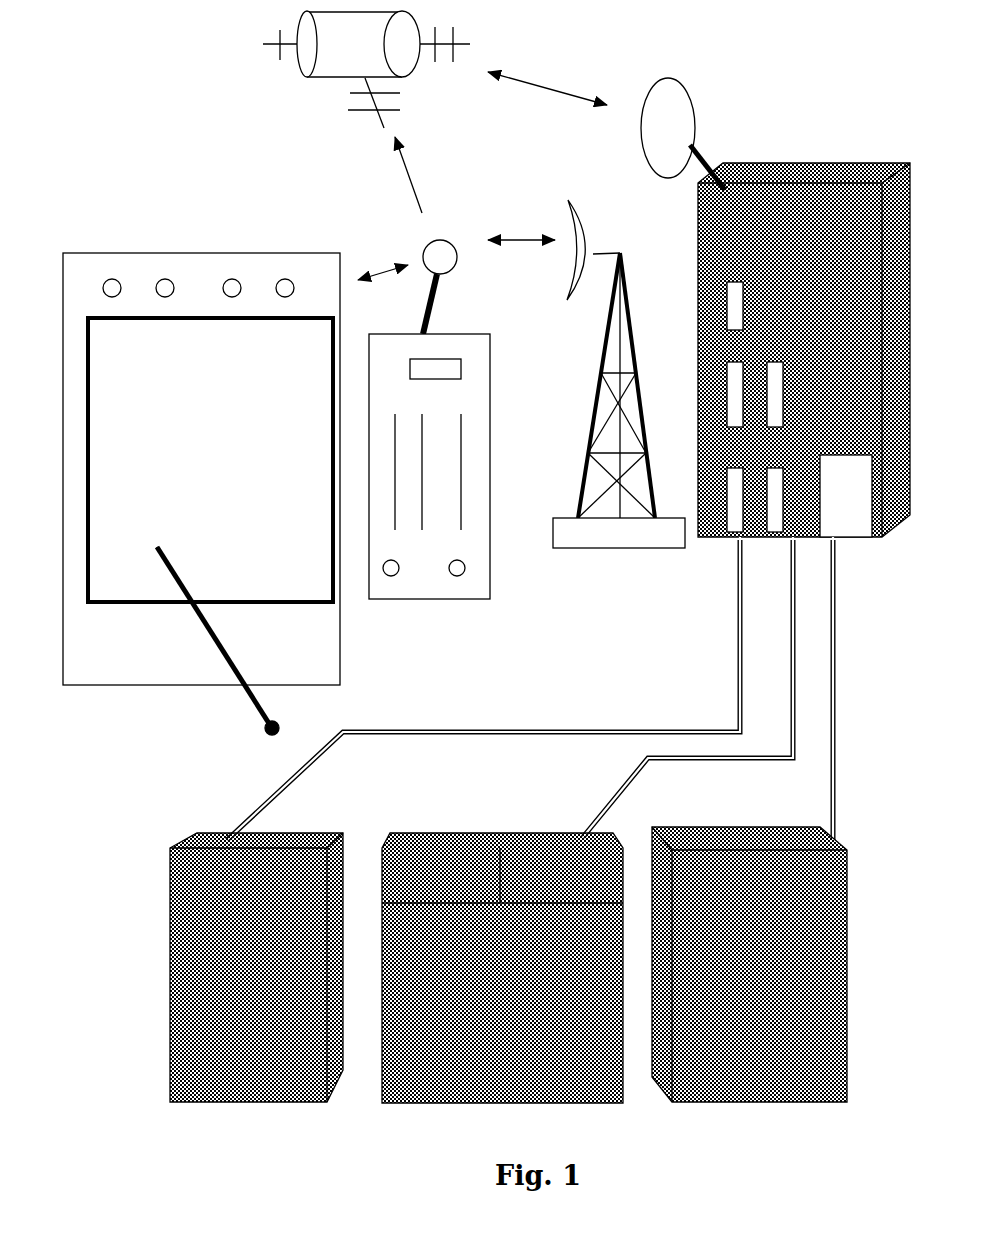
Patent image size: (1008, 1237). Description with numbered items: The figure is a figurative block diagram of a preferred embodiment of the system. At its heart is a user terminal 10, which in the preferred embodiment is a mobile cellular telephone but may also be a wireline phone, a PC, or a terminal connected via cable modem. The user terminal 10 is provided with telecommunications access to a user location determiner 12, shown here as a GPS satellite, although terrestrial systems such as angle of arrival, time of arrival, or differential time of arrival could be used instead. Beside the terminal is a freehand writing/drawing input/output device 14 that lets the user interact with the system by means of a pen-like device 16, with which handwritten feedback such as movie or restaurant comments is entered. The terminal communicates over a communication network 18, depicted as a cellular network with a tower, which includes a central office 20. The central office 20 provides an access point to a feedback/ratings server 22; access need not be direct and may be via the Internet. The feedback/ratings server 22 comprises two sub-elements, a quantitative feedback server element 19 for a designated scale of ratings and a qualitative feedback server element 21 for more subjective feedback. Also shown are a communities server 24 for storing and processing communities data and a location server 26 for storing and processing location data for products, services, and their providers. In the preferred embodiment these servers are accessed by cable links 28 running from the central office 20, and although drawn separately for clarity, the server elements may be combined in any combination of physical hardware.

The user terminal 10 is at (435, 600).
The user location determiner 12 is at (317, 79).
The freehand writing/drawing input/output device 14 is at (170, 250).
The pen-like device 16 is at (243, 718).
The communication network 18 is at (600, 336).
The quantitative feedback server element 19 is at (410, 862).
The central office 20 is at (775, 307).
The qualitative feedback server element 21 is at (553, 862).
The feedback/ratings server 22 is at (502, 935).
The communities server 24 is at (256, 967).
The location server 26 is at (749, 964).
The cable links 28 is at (830, 730).